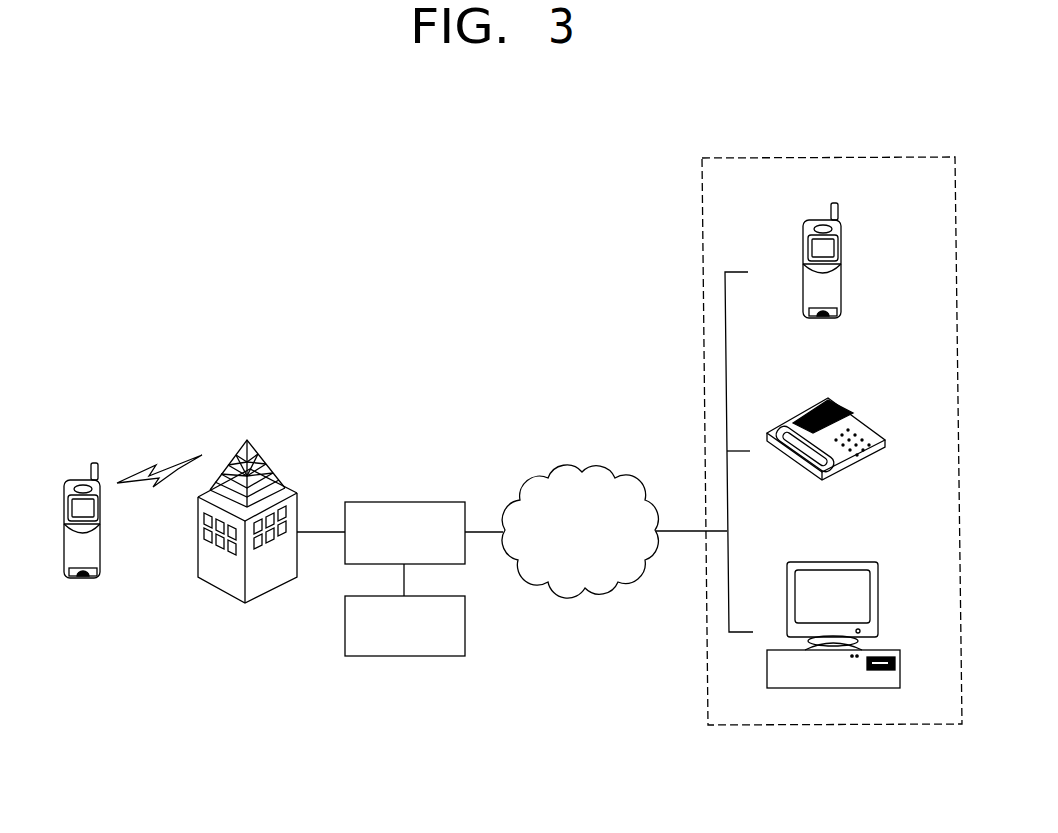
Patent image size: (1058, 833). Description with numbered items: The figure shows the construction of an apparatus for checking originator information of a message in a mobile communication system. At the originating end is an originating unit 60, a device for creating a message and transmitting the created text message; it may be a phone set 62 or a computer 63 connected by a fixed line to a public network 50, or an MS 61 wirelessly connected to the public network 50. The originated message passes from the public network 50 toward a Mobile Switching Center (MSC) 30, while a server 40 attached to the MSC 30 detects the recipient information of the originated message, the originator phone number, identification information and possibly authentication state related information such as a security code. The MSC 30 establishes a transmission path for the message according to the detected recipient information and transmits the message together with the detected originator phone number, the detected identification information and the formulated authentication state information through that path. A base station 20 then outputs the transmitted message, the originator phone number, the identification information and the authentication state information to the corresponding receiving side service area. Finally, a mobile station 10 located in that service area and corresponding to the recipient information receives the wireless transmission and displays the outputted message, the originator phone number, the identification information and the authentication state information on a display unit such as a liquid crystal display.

The mobile station 10 is at (83, 578).
The base station 20 is at (245, 603).
The Mobile Switching Center 30 is at (402, 502).
The server 40 is at (404, 656).
The public network 50 is at (567, 588).
The originating unit 60 is at (835, 725).
The MS 61 is at (843, 280).
The phone set 62 is at (885, 440).
The computer 63 is at (878, 597).